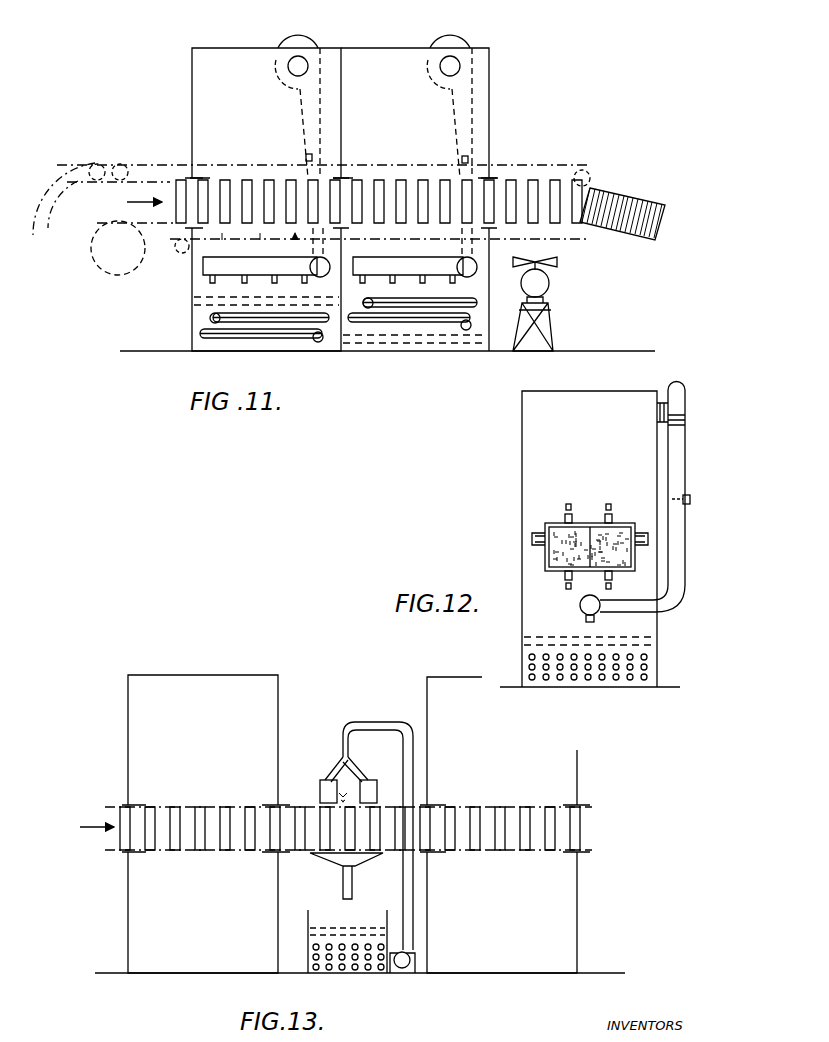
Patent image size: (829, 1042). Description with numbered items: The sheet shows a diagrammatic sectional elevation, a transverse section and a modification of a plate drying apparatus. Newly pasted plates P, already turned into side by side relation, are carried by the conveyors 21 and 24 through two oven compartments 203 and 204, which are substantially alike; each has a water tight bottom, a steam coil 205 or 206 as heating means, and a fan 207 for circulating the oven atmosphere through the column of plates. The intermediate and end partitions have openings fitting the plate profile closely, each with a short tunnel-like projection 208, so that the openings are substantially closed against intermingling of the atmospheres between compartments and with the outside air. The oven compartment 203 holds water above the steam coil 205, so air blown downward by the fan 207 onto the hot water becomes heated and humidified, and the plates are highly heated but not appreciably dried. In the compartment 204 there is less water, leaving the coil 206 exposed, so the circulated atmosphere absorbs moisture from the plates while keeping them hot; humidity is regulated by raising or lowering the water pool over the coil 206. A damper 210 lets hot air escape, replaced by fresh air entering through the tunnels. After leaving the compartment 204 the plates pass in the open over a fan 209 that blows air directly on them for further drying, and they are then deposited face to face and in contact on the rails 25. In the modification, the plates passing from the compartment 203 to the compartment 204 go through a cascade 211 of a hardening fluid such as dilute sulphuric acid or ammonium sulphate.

In FIG. 11, the conveyor 21 is at (175, 258).
In FIG. 12, the conveyor 21 is at (606, 577).
In FIG. 11, the conveyor 24 is at (133, 165).
In FIG. 12, the conveyor 24 is at (606, 512).
In FIG. 11, the rails 25 is at (594, 197).
In FIG. 11, the plates P is at (173, 193).
In FIG. 12, the plates P is at (553, 524).
In FIG. 13, the plates P is at (118, 815).
In FIG. 11, the oven compartment 203 is at (267, 199).
In FIG. 12, the oven compartment 203 is at (589, 539).
In FIG. 13, the oven compartment 203 is at (206, 824).
In FIG. 11, the oven compartment 204 is at (419, 199).
In FIG. 13, the oven compartment 204 is at (505, 825).
In FIG. 11, the steam coil 205 is at (296, 340).
In FIG. 12, the steam coil 205 is at (652, 659).
In FIG. 11, the steam coil 206 is at (408, 326).
In FIG. 11, the fan 207 is at (297, 45).
In FIG. 12, the fan 207 is at (687, 391).
In FIG. 11, the tunnel-like projection 208 is at (204, 177).
In FIG. 11, the fan 209 is at (553, 263).
In FIG. 12, the damper 210 is at (692, 499).
In FIG. 13, the cascade 211 is at (326, 770).